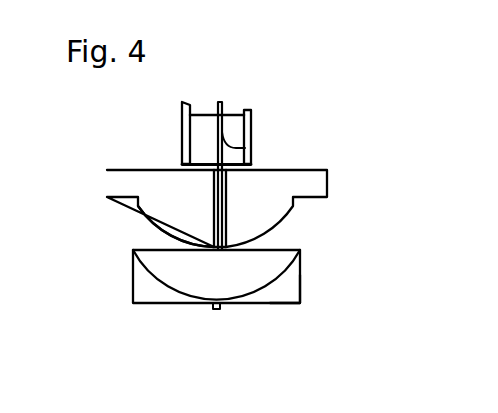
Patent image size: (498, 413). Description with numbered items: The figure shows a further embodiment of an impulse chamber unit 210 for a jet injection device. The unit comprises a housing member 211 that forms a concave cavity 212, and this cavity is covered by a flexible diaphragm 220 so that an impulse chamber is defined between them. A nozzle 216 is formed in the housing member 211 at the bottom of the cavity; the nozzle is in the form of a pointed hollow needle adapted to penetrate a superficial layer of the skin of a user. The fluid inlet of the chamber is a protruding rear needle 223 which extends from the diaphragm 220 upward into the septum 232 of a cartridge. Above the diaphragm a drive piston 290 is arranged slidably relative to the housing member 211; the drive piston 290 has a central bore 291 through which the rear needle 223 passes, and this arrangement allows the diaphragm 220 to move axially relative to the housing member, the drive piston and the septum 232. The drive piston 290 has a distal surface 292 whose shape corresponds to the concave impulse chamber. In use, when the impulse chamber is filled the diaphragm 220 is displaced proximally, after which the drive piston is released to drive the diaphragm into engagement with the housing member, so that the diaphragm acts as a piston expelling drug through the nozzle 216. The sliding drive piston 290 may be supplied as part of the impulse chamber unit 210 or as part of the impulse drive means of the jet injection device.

The impulse chamber unit 210 is at (383, 216).
The housing member 211 is at (287, 288).
The concave cavity 212 is at (258, 281).
The nozzle 216 is at (216, 310).
The flexible diaphragm 220 is at (282, 246).
The protruding rear needle 223 is at (245, 148).
The septum 232 is at (238, 123).
The drive piston 290 is at (313, 183).
The central bore 291 is at (212, 213).
The distal surface 292 is at (210, 211).